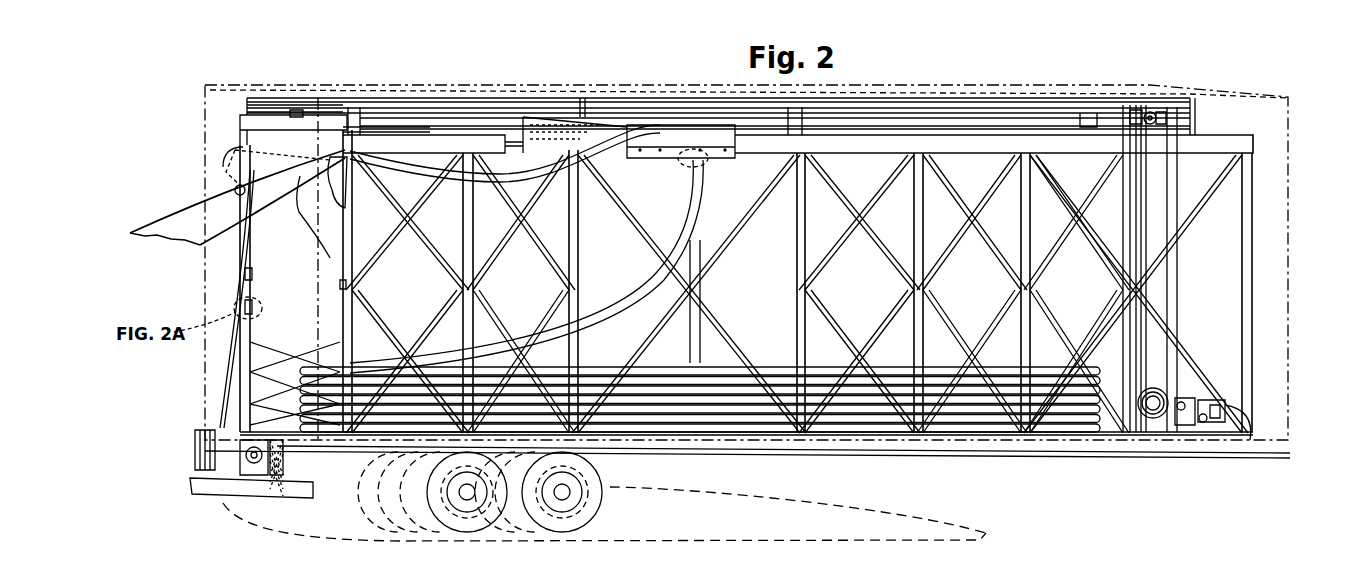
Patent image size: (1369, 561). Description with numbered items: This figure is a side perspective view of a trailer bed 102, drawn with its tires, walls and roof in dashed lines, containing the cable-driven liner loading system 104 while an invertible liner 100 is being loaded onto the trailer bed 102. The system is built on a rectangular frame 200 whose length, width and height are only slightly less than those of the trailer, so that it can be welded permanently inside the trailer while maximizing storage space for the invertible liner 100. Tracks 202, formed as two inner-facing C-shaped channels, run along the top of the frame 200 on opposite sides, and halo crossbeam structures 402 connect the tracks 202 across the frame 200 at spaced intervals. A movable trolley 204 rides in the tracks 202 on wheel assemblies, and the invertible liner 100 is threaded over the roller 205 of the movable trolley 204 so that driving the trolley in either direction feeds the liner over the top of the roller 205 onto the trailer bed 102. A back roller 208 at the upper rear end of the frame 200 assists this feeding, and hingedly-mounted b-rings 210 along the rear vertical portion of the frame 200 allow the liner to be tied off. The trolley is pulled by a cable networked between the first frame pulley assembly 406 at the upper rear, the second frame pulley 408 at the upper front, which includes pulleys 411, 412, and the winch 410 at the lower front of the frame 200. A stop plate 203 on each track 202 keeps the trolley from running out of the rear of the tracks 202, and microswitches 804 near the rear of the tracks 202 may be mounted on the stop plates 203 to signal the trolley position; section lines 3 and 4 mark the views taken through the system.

The section line 4- 4 is at (162, 72).
The invertible liner 100 is at (531, 342).
The trailer bed 102 is at (1122, 440).
The cable-driven liner loading system 104 is at (1210, 112).
The frame 200 is at (1260, 306).
The tracks 202 is at (450, 137).
The stop plate 203 is at (378, 122).
The movable trolley 204 is at (651, 132).
The roller 205 is at (704, 148).
The back roller 208 is at (300, 207).
The hingedly-mounted b-rings 210 is at (340, 284).
The section line 3- 3 is at (630, 272).
The halo crossbeam structures 402 is at (270, 100).
The first frame pulley assembly 406 is at (268, 115).
The second frame pulley 408 is at (1128, 120).
The winch 410 is at (1185, 390).
The pulley 411 is at (1148, 112).
The third frame pulley 412 is at (1161, 118).
The microswitches 804 is at (253, 138).